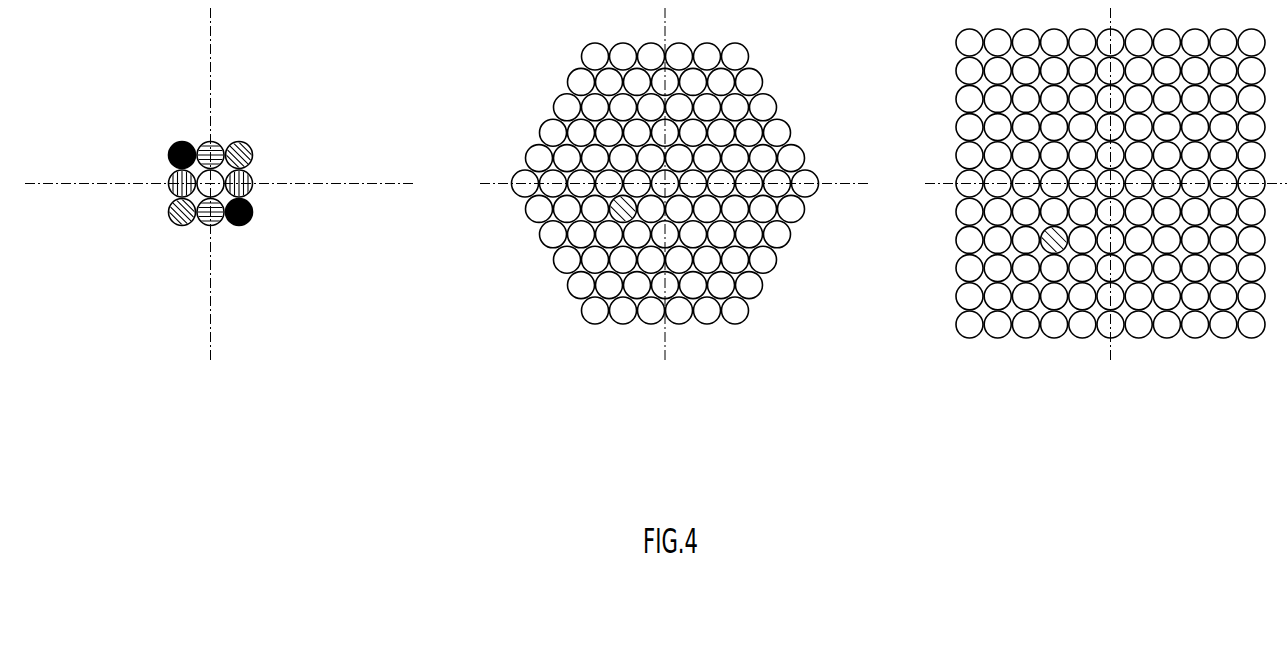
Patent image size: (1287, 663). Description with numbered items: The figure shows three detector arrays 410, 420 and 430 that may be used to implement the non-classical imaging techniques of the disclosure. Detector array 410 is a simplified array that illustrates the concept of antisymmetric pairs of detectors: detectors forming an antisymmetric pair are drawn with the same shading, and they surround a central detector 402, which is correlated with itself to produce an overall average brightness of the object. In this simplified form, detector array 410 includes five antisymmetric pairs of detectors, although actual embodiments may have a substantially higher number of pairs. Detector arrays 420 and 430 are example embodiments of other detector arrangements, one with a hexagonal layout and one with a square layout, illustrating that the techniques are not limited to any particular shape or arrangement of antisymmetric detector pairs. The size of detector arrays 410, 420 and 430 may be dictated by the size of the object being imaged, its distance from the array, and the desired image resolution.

The detector array 410 is at (119, 67).
The central detector 402 is at (212, 181).
The detector array 420 is at (535, 67).
The detector array 430 is at (932, 67).